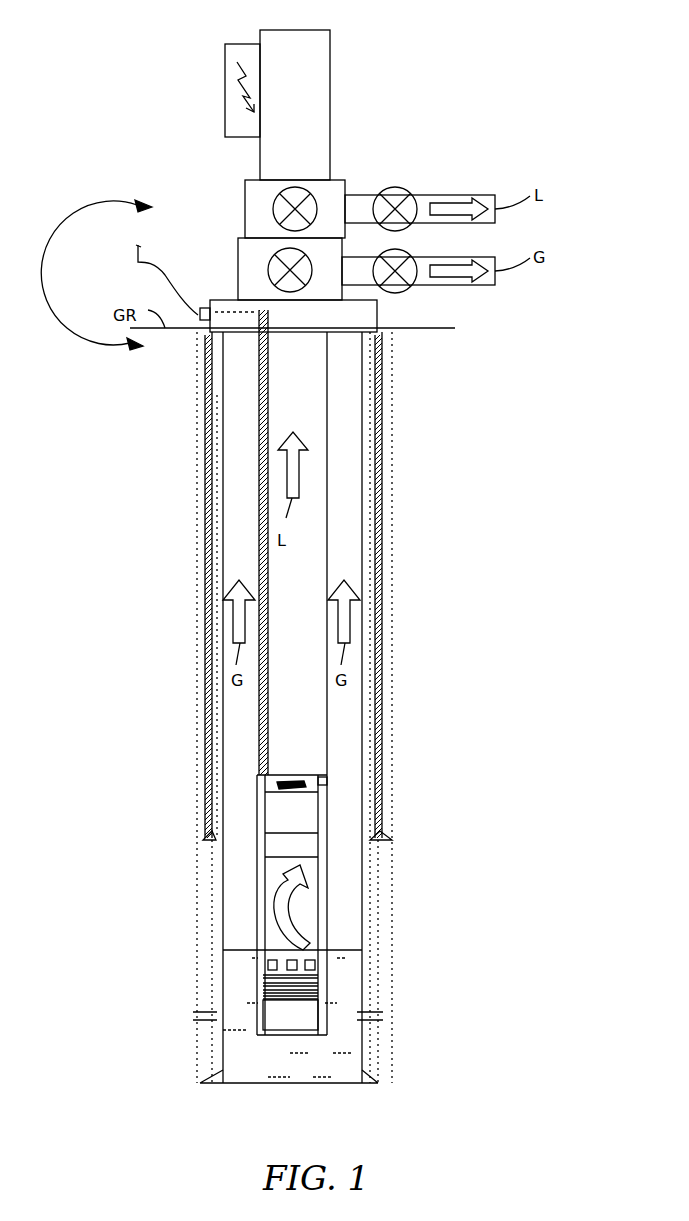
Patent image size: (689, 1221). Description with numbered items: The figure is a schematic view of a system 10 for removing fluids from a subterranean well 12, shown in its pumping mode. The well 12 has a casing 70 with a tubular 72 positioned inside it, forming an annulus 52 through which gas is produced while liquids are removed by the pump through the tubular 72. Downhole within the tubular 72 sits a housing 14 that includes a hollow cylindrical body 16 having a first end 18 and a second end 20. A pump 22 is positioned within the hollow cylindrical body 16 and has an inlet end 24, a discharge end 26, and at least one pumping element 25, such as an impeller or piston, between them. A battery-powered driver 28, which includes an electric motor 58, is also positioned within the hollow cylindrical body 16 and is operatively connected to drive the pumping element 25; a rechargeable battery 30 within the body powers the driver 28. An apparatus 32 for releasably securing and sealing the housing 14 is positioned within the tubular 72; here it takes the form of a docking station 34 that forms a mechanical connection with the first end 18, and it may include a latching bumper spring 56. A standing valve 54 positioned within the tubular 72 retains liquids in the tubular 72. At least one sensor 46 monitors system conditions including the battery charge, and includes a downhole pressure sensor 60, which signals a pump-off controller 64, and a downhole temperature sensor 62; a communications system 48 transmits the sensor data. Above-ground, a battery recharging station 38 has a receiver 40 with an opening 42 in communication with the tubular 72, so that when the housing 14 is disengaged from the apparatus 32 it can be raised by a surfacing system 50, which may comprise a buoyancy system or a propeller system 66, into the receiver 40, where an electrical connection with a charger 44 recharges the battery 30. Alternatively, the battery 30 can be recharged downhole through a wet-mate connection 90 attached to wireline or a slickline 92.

The system 10 is at (222, 947).
The subterranean well 12 is at (377, 329).
The housing 14 is at (320, 895).
The hollow cylindrical body 16 is at (222, 932).
The first end 18 is at (320, 950).
The second end 20 is at (305, 785).
The pump 22 is at (320, 920).
The inlet end 24 is at (248, 963).
The pumping element 25 is at (235, 933).
The discharge end 26 is at (381, 838).
The battery-powered driver 28 is at (257, 838).
The rechargeable battery 30 is at (318, 830).
The apparatus for releasably securing and sealing the housing 32 is at (327, 1005).
The docking station 34 is at (325, 980).
The battery recharging station 38 is at (225, 120).
The receiver 40 is at (330, 105).
The opening 42 is at (340, 178).
The charger 44 is at (226, 57).
The sensor 46 is at (318, 800).
The communications system 48 is at (260, 780).
The surfacing system 50 is at (300, 783).
The annulus 52 is at (356, 700).
The standing valve 54 is at (325, 1020).
The latching bumper spring 56 is at (283, 1002).
The electric motor 58 is at (325, 855).
The downhole pressure sensor 60 is at (205, 838).
The downhole temperature sensor 62 is at (327, 780).
The pump-off controller 64 is at (264, 792).
The propeller system 66 is at (300, 780).
The casing 70 is at (390, 587).
The tubular 72 is at (327, 560).
The downhole wet-mate connection 90 is at (264, 764).
The slickline 92 is at (259, 517).